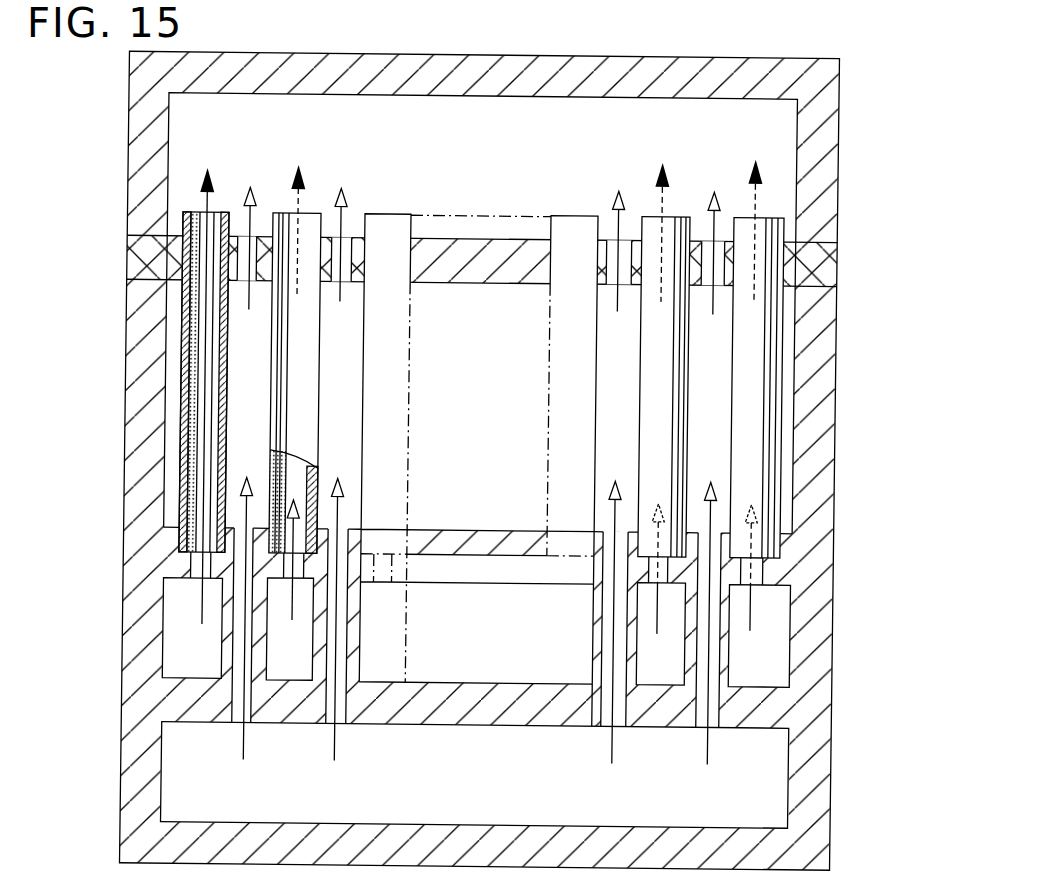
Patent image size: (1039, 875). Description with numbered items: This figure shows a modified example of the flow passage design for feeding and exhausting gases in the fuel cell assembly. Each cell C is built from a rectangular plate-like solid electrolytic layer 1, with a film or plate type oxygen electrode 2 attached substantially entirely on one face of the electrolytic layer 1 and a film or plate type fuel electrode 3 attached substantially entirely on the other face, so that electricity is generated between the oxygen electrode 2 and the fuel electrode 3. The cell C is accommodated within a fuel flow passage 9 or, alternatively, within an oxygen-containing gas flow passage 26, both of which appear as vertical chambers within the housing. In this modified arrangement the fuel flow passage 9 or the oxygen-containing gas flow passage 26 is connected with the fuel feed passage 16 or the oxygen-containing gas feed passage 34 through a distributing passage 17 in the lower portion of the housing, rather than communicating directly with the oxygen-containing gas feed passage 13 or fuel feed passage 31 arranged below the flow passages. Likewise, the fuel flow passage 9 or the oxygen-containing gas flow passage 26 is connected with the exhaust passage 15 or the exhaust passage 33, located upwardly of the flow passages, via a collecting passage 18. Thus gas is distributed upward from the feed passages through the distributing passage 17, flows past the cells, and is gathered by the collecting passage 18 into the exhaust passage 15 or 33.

The solid electrolytic layer 1 is at (134, 395).
The oxygen electrode 2 is at (193, 352).
The fuel electrode 3 is at (178, 460).
The fuel flow passage 9 is at (767, 398).
The oxygen-containing gas flow passage 26 is at (716, 420).
The oxygen-containing gas feed passage 13 is at (768, 636).
The fuel feed passage 31 is at (670, 648).
The exhaust passage 15 is at (516, 461).
The exhaust passage 33 is at (766, 134).
The fuel feed passage 16 is at (529, 789).
The oxygen-containing gas feed passage 34 is at (774, 790).
The distributing passage 17 is at (616, 695).
The collecting passage 18 is at (615, 282).
The cell C is at (646, 212).